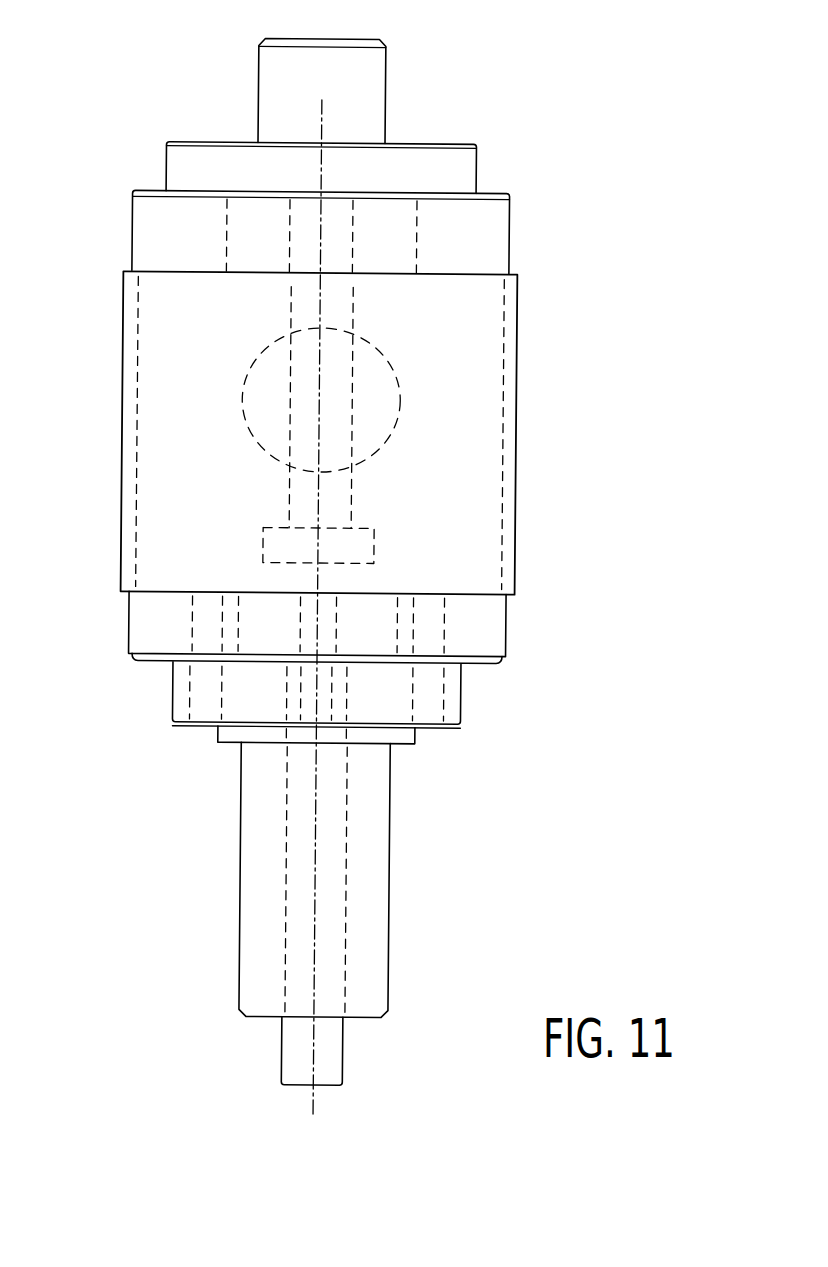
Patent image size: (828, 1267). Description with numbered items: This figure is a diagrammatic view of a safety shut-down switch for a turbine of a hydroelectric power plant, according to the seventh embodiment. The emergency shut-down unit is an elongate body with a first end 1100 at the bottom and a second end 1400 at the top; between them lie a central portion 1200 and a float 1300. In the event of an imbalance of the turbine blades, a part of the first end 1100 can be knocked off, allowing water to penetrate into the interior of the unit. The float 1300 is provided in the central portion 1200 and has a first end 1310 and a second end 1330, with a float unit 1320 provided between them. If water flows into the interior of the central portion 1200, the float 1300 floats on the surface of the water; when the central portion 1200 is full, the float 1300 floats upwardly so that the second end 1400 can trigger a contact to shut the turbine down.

The first end 1100 is at (389, 832).
The central portion 1200 is at (517, 465).
The float 1300 is at (453, 145).
The first end 1310 is at (365, 541).
The float unit 1320 is at (388, 387).
The second end 1330 is at (183, 169).
The second end 1400 is at (290, 38).